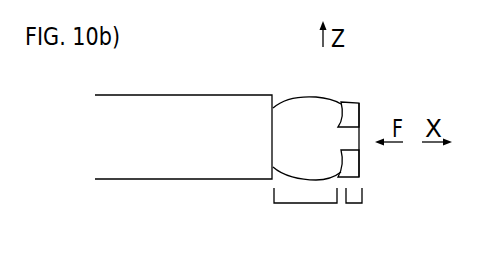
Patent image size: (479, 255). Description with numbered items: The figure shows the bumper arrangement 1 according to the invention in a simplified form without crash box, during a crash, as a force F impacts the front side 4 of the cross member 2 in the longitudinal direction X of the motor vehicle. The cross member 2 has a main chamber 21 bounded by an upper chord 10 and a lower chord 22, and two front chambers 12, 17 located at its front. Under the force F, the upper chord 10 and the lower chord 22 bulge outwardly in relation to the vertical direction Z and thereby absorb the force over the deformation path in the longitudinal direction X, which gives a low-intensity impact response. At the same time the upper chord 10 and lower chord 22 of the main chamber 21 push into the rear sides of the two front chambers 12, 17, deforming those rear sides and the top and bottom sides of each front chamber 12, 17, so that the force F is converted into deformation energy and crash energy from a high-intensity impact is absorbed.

The upper chord 10 is at (302, 97).
The front chamber 12 is at (352, 112).
The front side 4 is at (364, 118).
The front chamber 17 is at (359, 168).
The main chamber 21 is at (307, 140).
The lower chord 22 is at (290, 178).
The bumper arrangement 1 is at (307, 205).
The cross member 2 is at (354, 205).